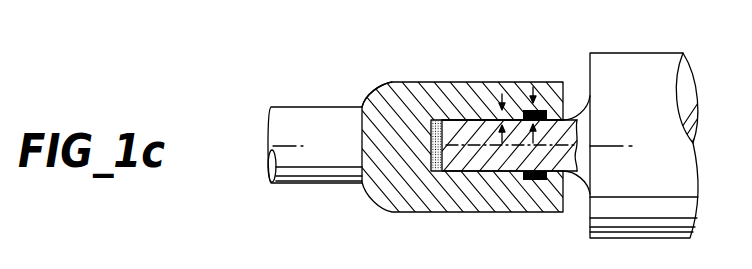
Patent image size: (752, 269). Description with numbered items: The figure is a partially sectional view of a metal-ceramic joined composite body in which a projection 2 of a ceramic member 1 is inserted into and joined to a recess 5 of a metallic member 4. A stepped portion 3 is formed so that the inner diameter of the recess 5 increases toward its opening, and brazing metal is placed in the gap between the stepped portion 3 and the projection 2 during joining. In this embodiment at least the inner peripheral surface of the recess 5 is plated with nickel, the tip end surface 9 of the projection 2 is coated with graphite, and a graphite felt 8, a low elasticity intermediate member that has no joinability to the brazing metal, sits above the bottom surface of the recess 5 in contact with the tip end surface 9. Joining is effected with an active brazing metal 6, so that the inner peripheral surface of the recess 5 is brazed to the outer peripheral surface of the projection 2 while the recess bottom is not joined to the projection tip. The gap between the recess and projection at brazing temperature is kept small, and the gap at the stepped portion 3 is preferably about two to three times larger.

The ceramic member 1 is at (628, 63).
The projection 2 is at (508, 154).
The stepped portion 3 is at (550, 110).
The metallic member 4 is at (320, 174).
The recess 5 is at (470, 197).
The active brazing metal 6 is at (477, 118).
The graphite felt 8 is at (433, 123).
The tip end surface 9 is at (387, 106).